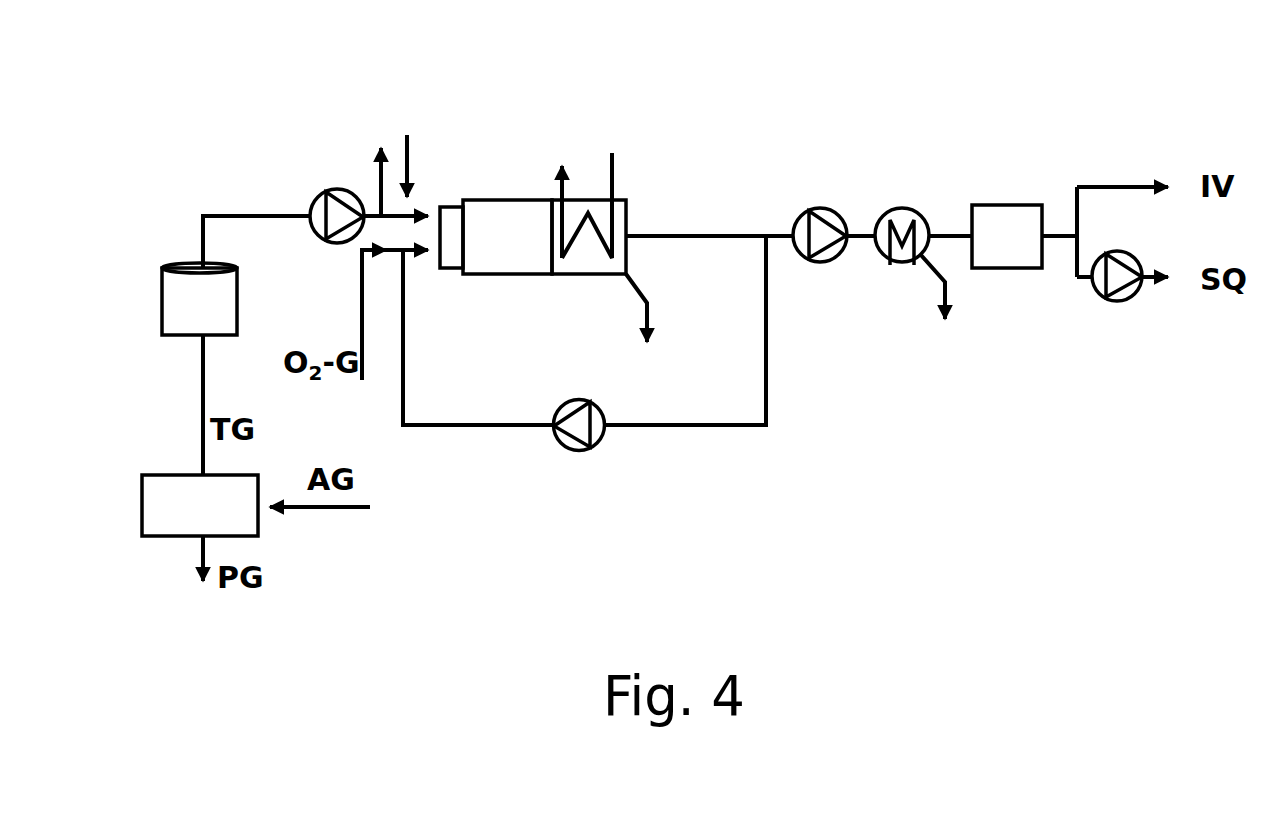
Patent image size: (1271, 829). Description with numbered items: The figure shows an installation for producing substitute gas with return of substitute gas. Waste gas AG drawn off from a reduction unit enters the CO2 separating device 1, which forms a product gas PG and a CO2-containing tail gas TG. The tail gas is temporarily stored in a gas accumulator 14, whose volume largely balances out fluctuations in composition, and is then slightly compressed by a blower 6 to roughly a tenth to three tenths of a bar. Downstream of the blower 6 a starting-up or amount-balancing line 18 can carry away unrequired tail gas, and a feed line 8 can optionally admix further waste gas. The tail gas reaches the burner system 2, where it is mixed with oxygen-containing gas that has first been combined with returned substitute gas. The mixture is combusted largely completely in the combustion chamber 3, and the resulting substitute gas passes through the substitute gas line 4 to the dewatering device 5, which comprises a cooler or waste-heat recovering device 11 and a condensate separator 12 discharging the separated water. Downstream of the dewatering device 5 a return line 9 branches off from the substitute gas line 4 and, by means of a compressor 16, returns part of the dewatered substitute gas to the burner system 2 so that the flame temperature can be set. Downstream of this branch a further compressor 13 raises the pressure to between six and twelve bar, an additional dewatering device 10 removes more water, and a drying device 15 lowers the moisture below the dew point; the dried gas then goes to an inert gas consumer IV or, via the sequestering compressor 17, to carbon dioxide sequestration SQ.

The CO2 separating device 1 is at (170, 503).
The burner system 2 is at (450, 217).
The combustion chamber 3 is at (513, 218).
The substitute gas line 4 is at (643, 236).
The dewatering device 5 is at (576, 266).
The blower 6 is at (322, 210).
The feed line 8 is at (407, 157).
The return line 9 is at (766, 392).
The additional dewatering device 10 is at (881, 242).
The cooler or waste-heat recovering device 11 is at (562, 223).
The condensate separator 12 is at (811, 309).
The further compressor 13 is at (807, 227).
The gas accumulator 14 is at (175, 302).
The drying device 15 is at (1013, 217).
The compressor 16 is at (587, 433).
The sequestering compressor 17 is at (1103, 282).
The starting-up or amount-balancing line 18 is at (381, 190).